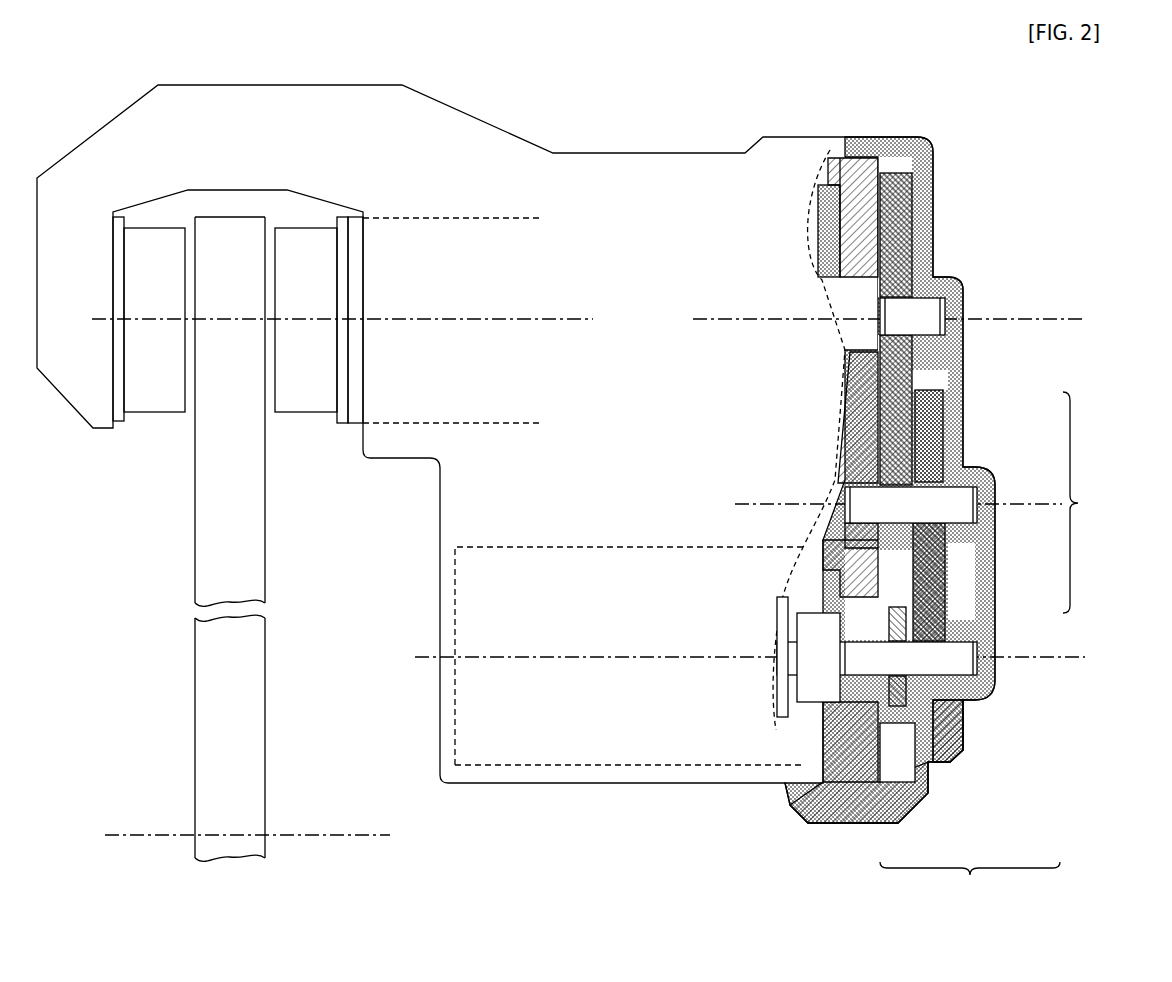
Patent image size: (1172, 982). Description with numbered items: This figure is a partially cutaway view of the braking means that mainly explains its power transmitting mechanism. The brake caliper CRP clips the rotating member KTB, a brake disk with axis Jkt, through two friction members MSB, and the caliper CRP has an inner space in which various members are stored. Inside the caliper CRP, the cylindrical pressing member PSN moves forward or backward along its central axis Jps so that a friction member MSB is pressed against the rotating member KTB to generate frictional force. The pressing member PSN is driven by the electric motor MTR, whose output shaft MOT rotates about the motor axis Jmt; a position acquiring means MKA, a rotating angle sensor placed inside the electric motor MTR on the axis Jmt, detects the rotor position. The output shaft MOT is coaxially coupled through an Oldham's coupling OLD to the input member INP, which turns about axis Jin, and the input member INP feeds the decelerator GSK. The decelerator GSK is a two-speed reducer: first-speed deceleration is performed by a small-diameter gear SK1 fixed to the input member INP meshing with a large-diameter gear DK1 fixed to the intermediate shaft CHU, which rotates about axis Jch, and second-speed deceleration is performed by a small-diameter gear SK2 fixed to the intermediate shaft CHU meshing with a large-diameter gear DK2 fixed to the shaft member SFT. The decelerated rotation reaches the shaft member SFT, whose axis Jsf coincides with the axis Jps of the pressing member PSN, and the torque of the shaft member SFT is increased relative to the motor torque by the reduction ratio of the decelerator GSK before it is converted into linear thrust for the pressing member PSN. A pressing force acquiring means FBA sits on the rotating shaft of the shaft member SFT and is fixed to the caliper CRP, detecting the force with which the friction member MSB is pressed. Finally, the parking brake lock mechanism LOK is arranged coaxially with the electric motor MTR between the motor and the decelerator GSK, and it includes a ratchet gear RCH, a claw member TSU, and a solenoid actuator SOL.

The friction member MSB is at (302, 442).
The rotating member KTB is at (267, 563).
The pressing member PSN is at (482, 424).
The electric motor MTR is at (555, 765).
The pressing force acquiring means FBA is at (820, 185).
The brake caliper CRP is at (933, 205).
The shaft member SFT is at (963, 297).
The large-diameter gear DK2 is at (963, 410).
The small-diameter gear SK2 is at (963, 445).
The decelerator GSK is at (1099, 502).
The intermediate shaft CHU is at (993, 513).
The large-diameter gear DK1 is at (953, 563).
The small-diameter gear SK1 is at (953, 610).
The input member INP is at (993, 672).
The position acquiring means MKA is at (778, 712).
The output shaft MOT is at (793, 720).
The Oldham's coupling OLD is at (857, 720).
The solenoid actuator SOL is at (900, 782).
The claw member TSU is at (912, 702).
The ratchet gear RCH is at (968, 740).
The parking brake lock mechanism LOK is at (970, 885).
The central axis Jps is at (424, 319).
The shaft axis Jsf is at (1080, 321).
The hub axis Jch is at (738, 506).
The rotating axis Jmt is at (530, 659).
The input axis Jin is at (1083, 660).
The knob axis Jkt is at (297, 836).